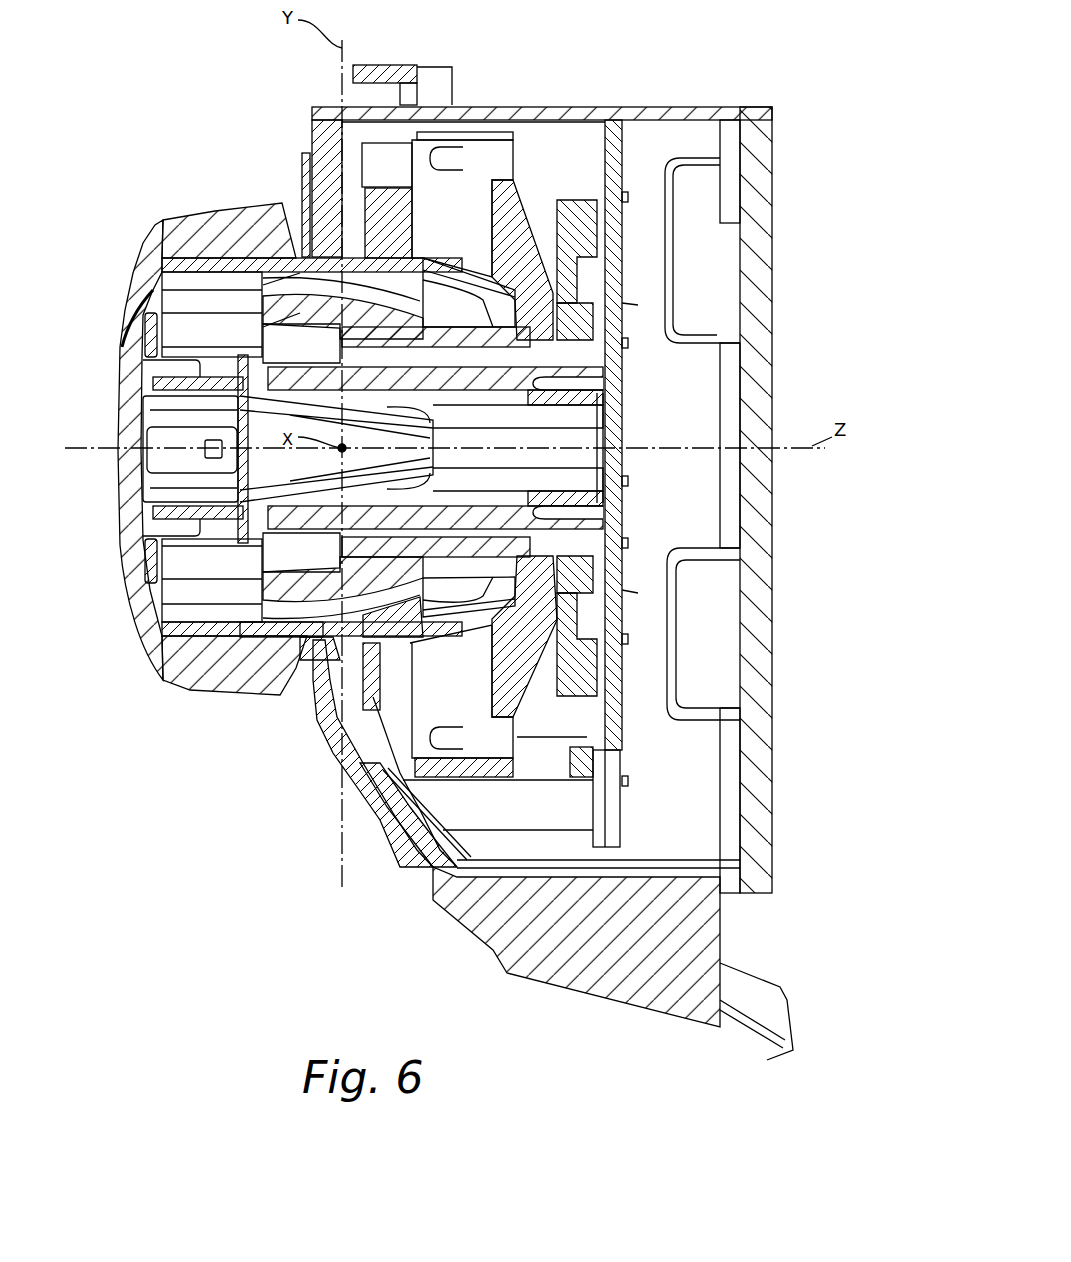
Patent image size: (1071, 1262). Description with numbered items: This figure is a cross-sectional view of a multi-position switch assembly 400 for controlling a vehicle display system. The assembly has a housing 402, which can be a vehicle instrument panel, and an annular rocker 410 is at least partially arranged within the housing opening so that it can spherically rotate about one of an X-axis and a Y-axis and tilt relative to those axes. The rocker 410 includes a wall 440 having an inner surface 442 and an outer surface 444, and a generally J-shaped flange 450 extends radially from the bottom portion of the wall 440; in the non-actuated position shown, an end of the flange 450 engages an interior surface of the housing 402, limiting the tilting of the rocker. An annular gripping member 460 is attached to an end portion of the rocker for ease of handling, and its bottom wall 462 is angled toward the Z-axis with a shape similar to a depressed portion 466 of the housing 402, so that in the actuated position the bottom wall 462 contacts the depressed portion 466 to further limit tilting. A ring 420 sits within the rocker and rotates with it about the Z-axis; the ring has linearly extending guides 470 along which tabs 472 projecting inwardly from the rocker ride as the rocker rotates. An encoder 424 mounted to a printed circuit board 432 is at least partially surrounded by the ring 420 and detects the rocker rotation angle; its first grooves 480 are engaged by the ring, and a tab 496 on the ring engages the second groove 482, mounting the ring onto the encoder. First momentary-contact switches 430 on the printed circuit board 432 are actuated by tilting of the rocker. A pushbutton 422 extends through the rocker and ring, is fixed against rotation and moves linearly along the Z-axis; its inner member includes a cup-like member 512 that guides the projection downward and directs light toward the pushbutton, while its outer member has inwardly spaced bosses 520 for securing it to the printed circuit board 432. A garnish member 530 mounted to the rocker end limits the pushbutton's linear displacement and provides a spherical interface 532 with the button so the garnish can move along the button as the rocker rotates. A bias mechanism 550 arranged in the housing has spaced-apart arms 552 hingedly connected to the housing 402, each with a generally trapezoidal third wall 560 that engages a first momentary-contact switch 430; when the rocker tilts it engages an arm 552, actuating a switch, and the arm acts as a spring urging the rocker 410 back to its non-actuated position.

The multi-position switch assembly 400 is at (252, 60).
The housing 402 is at (473, 940).
The annular rocker 410 is at (257, 257).
The ring 420 is at (302, 582).
The pushbutton 422 is at (215, 557).
The encoder 424 is at (580, 562).
The first momentary-contact switch 430 is at (573, 677).
The printed circuit board 432 is at (617, 402).
The wall 440 is at (210, 632).
The inner surface 442 is at (183, 277).
The outer surface 444 is at (210, 275).
The flange 450 is at (400, 255).
The annular gripping member 460 is at (160, 687).
The bottom wall 462 is at (300, 667).
The depressed portion 466 is at (310, 680).
The linear extending guide 470 is at (425, 632).
The tab 472 is at (348, 290).
The first groove 480 is at (490, 364).
The second groove 482 is at (520, 553).
The tab 496 is at (577, 523).
The cup-like member 512 is at (397, 445).
The boss 520 is at (590, 372).
The garnish member 530 is at (128, 305).
The spherical interface 532 is at (147, 293).
The bias mechanism 550 is at (527, 227).
The arm 552 is at (453, 195).
The third wall 560 is at (522, 670).